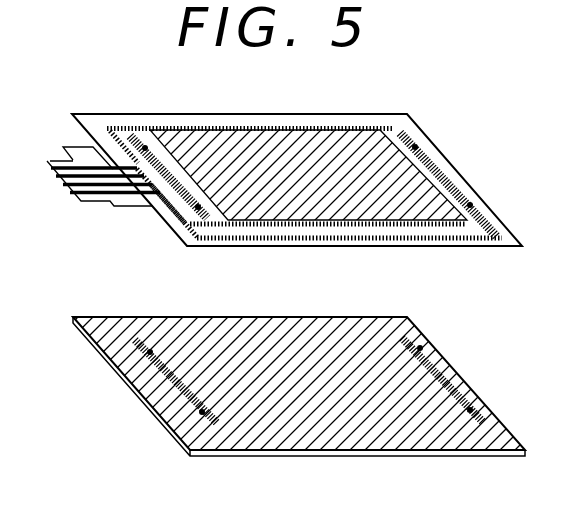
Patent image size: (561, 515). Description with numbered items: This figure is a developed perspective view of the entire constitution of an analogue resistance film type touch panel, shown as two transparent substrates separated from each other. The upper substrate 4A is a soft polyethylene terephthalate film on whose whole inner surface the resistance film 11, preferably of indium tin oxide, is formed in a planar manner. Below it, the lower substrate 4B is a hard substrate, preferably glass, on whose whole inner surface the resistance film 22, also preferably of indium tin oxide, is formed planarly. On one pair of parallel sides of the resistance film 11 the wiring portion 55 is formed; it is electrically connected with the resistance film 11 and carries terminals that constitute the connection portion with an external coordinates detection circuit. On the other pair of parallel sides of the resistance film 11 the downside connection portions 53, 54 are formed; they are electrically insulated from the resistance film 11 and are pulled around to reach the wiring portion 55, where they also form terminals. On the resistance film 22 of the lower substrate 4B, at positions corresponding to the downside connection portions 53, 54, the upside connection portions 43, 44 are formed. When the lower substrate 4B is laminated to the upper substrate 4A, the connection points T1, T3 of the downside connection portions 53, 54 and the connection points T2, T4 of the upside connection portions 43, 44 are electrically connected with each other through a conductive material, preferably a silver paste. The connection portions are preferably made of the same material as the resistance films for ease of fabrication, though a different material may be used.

The upper substrate 4A is at (403, 123).
The lower substrate 4B is at (435, 460).
The resistance film 11 is at (318, 130).
The resistance film 22 is at (345, 447).
The upside connection portion 43 is at (140, 402).
The upside connection portion 44 is at (443, 368).
The downside connection portion 53 is at (163, 203).
The downside connection portion 54 is at (445, 175).
The wiring portion 55 is at (237, 127).
The connection point T1 is at (138, 137).
The connection point T2 is at (140, 340).
The connection point T3 is at (418, 148).
The connection point T4 is at (425, 342).